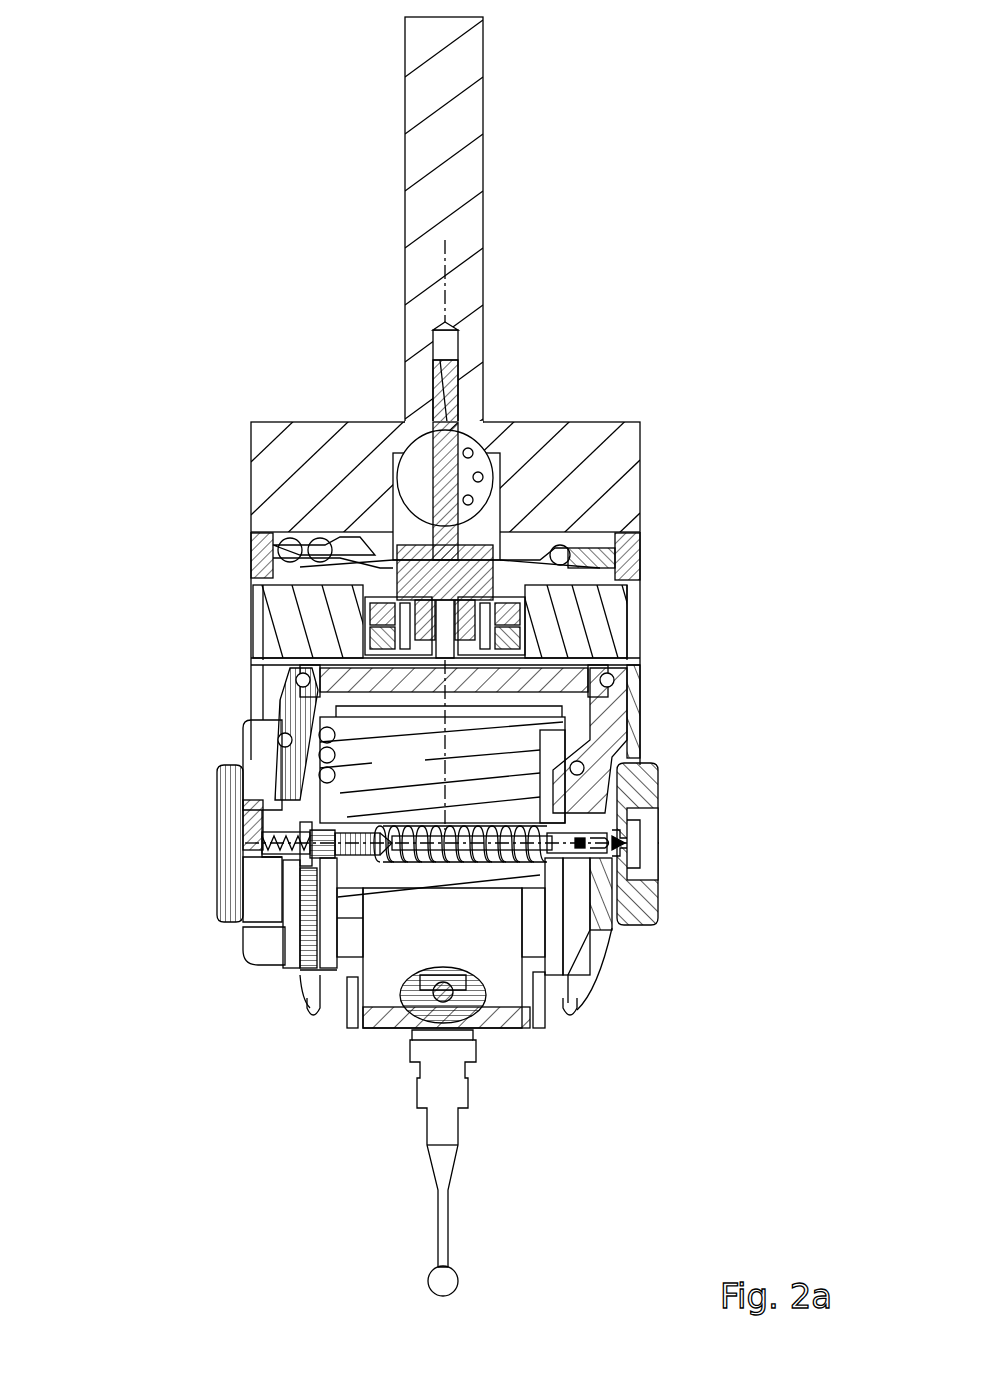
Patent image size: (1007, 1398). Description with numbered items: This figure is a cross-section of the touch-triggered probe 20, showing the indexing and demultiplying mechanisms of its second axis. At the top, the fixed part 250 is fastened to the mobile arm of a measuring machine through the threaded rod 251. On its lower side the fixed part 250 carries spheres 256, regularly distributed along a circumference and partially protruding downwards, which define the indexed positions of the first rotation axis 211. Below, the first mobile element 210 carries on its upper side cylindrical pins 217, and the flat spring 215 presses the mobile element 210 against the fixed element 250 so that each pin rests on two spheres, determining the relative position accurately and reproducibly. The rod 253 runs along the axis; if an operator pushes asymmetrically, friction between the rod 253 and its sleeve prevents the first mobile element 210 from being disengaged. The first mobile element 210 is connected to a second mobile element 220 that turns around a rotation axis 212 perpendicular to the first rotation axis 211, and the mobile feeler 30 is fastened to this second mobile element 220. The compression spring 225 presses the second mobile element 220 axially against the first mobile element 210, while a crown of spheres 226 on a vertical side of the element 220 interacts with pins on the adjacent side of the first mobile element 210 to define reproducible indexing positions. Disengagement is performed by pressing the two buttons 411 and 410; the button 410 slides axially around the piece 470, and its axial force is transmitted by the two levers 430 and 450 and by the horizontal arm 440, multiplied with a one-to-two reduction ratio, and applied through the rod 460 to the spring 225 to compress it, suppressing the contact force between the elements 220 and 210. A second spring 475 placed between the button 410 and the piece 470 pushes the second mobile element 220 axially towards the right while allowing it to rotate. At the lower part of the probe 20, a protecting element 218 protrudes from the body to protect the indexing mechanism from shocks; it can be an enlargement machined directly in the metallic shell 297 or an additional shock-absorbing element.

The touch-triggered probe 20 is at (190, 472).
The threaded rod 251 is at (468, 105).
The first rotation axis 211 is at (447, 246).
The rod 253 is at (450, 383).
The flat spring 215 is at (523, 560).
The fixed part 250 is at (622, 462).
The spheres 256 is at (265, 554).
The cylindrical pins 217 is at (628, 553).
The horizontal arm 440 is at (541, 633).
The first mobile element 210 is at (627, 647).
The lever 430 is at (292, 700).
The lever 450 is at (612, 708).
The crown of spheres 226 is at (262, 770).
The second mobile element 220 is at (420, 778).
The button 411 is at (655, 790).
The rotation axis 212 is at (228, 830).
The second spring 475 is at (262, 852).
The button 410 is at (232, 922).
The compression spring 225 is at (470, 862).
The rod 460 is at (512, 858).
The piece 470 is at (310, 870).
The metallic shell 297 is at (610, 968).
The protecting element 218 is at (574, 1014).
The mobile feeler 30 is at (397, 1173).